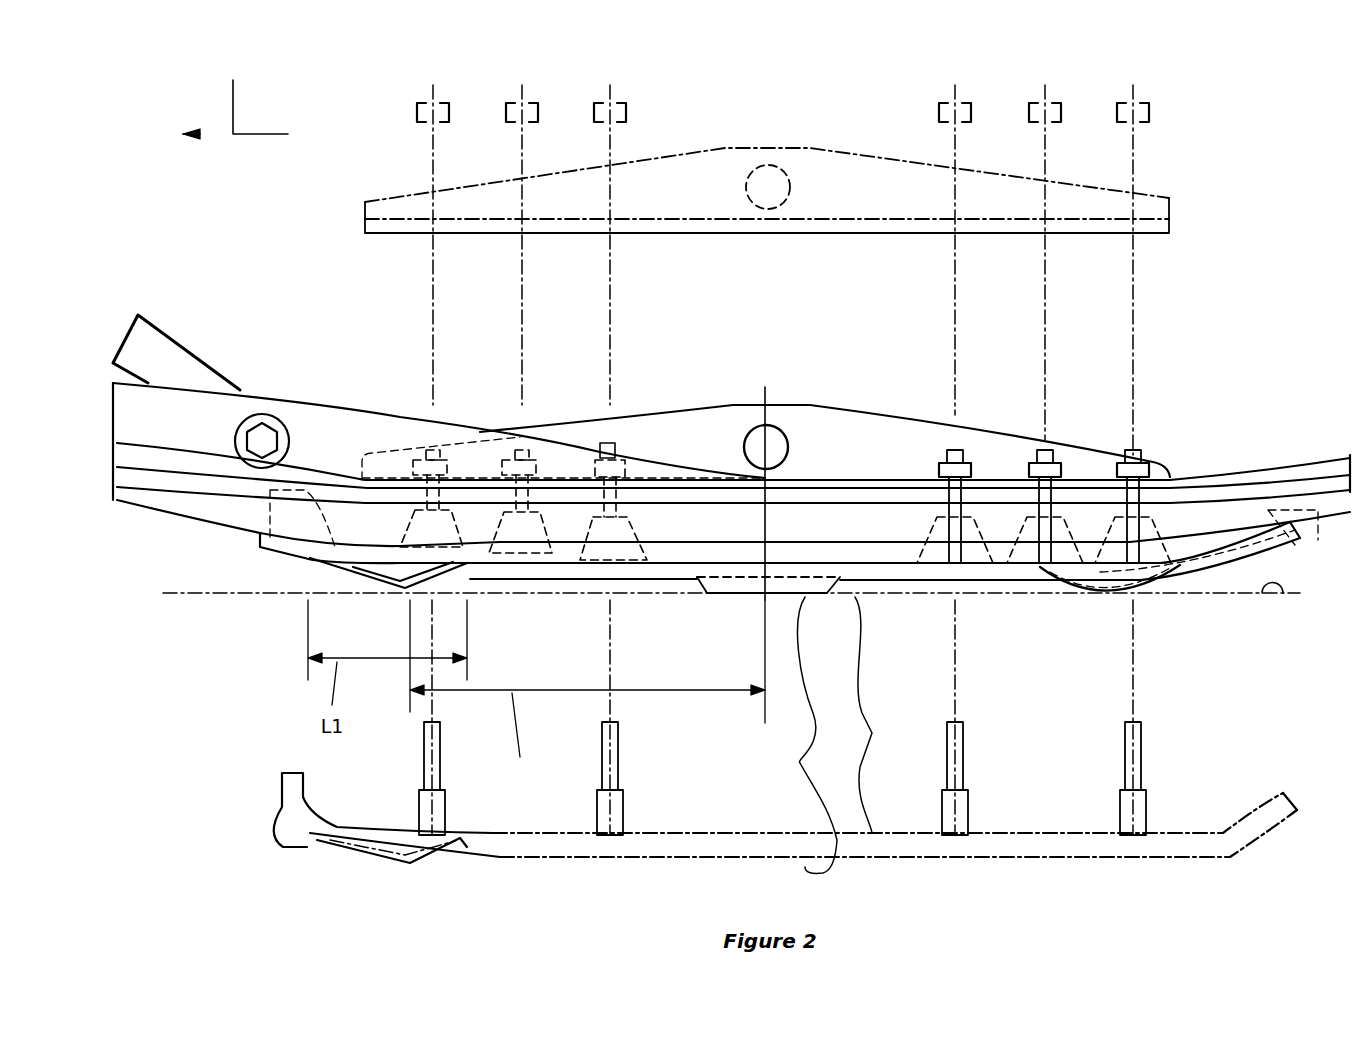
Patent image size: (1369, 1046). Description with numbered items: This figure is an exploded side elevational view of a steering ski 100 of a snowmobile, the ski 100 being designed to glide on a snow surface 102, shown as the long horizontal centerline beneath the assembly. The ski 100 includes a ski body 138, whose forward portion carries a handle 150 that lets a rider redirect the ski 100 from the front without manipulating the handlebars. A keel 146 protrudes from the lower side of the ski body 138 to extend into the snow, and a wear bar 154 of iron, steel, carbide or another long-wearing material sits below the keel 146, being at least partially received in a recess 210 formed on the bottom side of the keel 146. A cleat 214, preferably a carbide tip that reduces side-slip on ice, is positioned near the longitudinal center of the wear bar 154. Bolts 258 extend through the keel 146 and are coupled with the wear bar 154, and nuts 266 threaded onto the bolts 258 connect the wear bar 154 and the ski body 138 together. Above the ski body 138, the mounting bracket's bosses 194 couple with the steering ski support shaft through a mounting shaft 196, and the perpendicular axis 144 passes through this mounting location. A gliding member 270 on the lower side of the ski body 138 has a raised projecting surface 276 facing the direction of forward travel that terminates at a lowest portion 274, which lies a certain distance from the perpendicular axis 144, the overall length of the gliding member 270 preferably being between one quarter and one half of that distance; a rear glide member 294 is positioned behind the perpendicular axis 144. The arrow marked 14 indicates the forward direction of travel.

The direction arrow 14 is at (235, 97).
The front ski 100 is at (1290, 398).
The snow surface 102 is at (1283, 602).
The ski body 138 is at (1208, 465).
The perpendicular axis 144 is at (763, 707).
The keel 146 is at (890, 578).
The handle 150 is at (165, 358).
The wear bar 154 is at (860, 735).
The boss 194 is at (782, 431).
The mounting shaft 196 is at (751, 432).
The recess 210 is at (1033, 580).
The cleat 214 is at (895, 804).
The bolt 258 is at (600, 440).
The nut 266 is at (1150, 110).
The gliding member 270 is at (308, 567).
The lowest portion 274 is at (450, 572).
The raised projecting surface 276 is at (335, 581).
The rear glide member 294 is at (1160, 603).